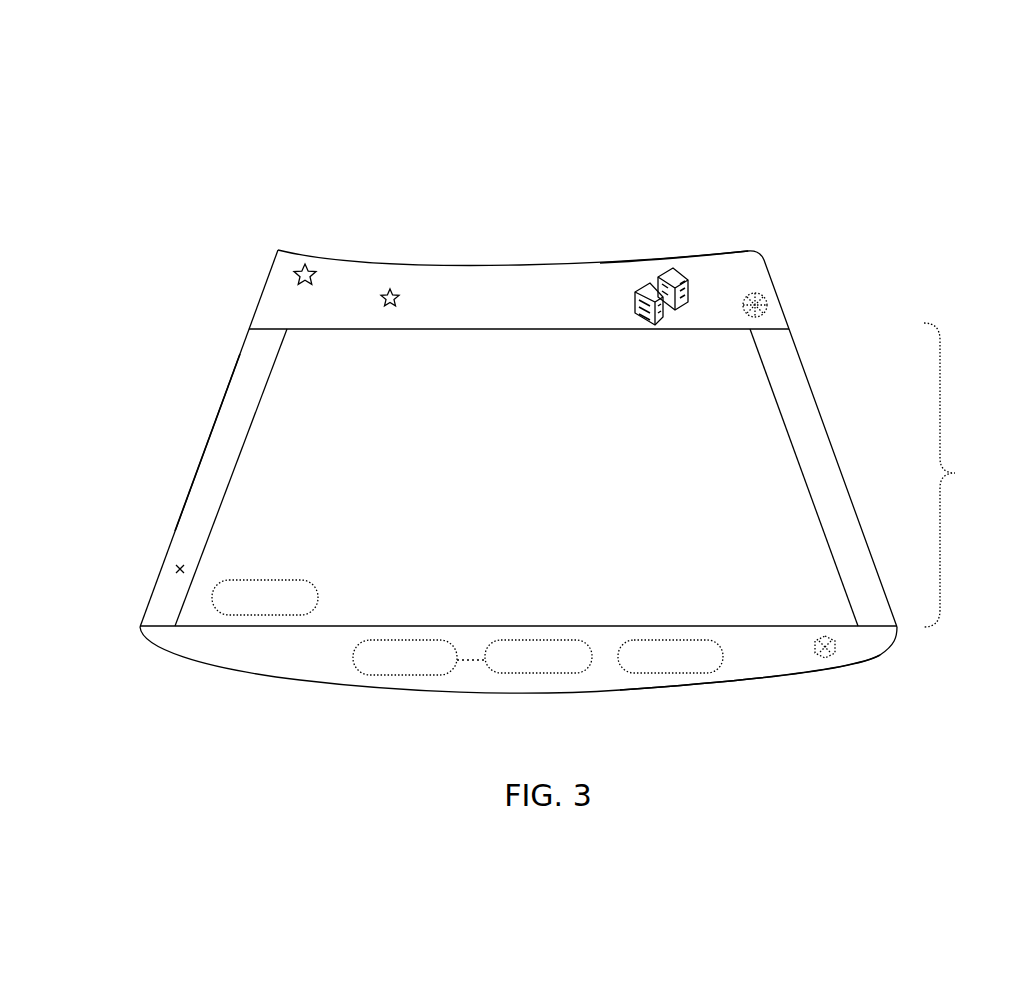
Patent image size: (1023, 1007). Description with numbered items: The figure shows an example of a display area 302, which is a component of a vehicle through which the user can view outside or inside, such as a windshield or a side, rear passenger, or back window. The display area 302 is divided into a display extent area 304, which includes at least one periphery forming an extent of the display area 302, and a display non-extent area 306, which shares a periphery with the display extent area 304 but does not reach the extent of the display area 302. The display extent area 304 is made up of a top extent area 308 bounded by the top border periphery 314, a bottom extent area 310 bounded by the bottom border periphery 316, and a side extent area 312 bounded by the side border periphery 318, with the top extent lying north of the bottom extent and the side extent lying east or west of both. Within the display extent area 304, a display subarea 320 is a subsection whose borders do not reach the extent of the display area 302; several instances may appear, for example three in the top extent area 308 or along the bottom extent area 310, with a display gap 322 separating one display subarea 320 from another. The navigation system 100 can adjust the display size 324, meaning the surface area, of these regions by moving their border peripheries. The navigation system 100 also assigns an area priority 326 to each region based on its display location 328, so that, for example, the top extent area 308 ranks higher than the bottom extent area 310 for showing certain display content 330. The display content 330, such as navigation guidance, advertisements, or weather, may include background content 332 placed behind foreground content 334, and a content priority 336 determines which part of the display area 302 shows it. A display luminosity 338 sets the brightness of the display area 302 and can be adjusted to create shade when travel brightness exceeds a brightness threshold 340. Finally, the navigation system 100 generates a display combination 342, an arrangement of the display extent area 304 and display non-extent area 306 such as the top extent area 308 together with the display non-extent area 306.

The navigation system 100 is at (270, 106).
The display area 302 is at (272, 241).
The display extent area 304 is at (252, 375).
The display non-extent area 306 is at (300, 357).
The top extent area 308 is at (738, 282).
The bottom extent area 310 is at (158, 635).
The side extent area 312 is at (780, 355).
The top border periphery 314 is at (713, 255).
The bottom border periphery 316 is at (793, 672).
The side border periphery 318 is at (202, 462).
The display subarea 320 is at (390, 655).
The display gap 322 is at (472, 663).
The display size 324 is at (968, 475).
The area priority 326 is at (305, 265).
The display location 328 is at (180, 563).
The display content 330 is at (503, 268).
The background content 332 is at (666, 275).
The foreground content 334 is at (638, 292).
The content priority 336 is at (390, 289).
The display luminosity 338 is at (765, 300).
The brightness threshold 340 is at (263, 607).
The display combination 342 is at (565, 665).